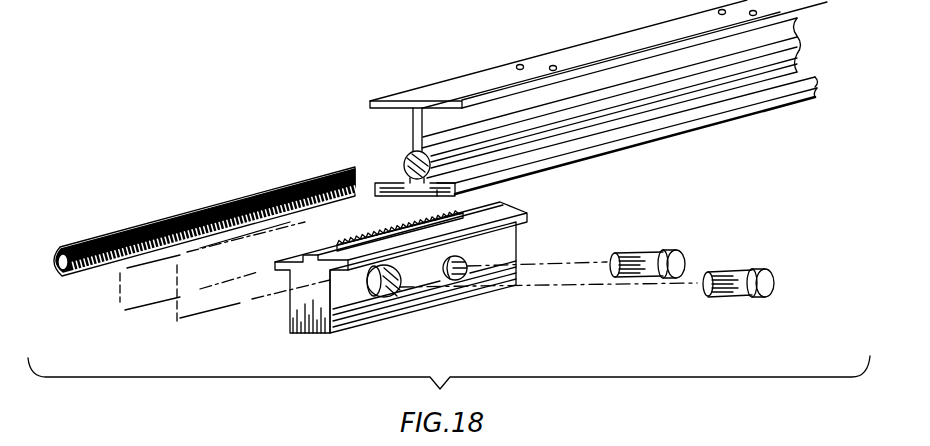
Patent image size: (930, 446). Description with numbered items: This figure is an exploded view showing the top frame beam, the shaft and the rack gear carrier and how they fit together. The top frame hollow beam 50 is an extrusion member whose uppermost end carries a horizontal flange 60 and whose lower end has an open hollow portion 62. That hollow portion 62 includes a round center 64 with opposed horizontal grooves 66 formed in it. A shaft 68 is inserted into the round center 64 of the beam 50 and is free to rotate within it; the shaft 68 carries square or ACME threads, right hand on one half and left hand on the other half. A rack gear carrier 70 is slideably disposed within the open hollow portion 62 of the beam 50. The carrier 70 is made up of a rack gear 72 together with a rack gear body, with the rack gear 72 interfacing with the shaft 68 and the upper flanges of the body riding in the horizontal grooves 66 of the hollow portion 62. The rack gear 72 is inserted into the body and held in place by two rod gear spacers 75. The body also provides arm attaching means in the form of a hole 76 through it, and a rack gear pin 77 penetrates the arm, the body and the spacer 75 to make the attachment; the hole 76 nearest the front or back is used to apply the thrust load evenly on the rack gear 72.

The top frame hollow beam 50 is at (755, 121).
The horizontal flange 60 is at (371, 100).
The open hollow portion 62 is at (410, 196).
The round center 64 is at (407, 157).
The opposed horizontal grooves 66 is at (470, 183).
The shaft 68 is at (143, 225).
The rack gear carrier 70 is at (533, 255).
The rack gear 72 is at (340, 242).
The rod gear spacer 75 is at (378, 286).
The hole 76 is at (457, 281).
The rack gear pin 77 is at (645, 252).